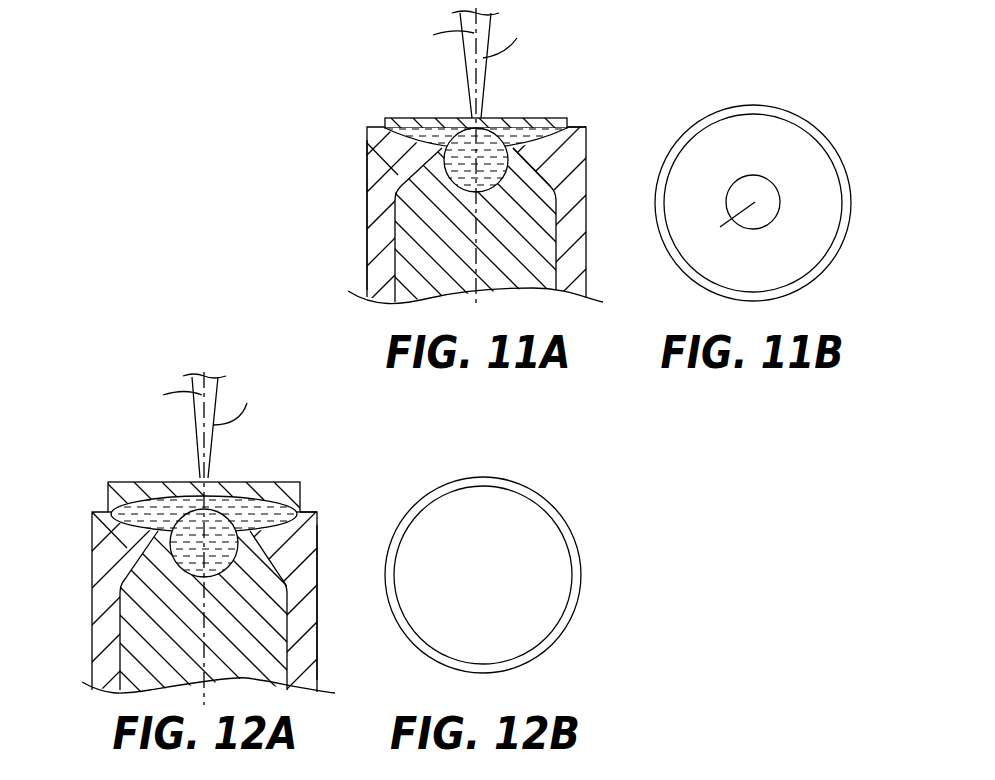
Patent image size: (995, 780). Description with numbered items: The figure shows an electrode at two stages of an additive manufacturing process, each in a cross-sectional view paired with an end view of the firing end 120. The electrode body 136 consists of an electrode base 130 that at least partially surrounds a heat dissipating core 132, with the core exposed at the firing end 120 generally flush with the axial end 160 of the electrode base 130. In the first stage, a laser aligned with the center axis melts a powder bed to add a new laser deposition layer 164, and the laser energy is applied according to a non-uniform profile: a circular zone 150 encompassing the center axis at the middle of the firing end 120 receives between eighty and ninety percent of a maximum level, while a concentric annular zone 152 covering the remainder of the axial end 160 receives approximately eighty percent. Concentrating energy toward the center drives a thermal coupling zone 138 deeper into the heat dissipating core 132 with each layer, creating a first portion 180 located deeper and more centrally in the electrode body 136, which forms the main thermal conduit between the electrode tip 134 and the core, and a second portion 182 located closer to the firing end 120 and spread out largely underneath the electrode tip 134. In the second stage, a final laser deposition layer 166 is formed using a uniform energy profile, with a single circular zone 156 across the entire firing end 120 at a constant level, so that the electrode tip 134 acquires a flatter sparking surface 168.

In FIG. 11A, the firing end 120 is at (473, 159).
In FIG. 11B, the firing end 120 is at (766, 178).
In FIG. 12A, the firing end 120 is at (252, 538).
In FIG. 12B, the firing end 120 is at (516, 566).
In FIG. 11A, the electrode base 130 is at (390, 152).
In FIG. 12A, the electrode base 130 is at (105, 533).
In FIG. 11A, the heat dissipating core 132 is at (452, 245).
In FIG. 12A, the heat dissipating core 132 is at (187, 633).
In FIG. 12A, the electrode tip 134 is at (298, 488).
In FIG. 11A, the electrode body 136 is at (367, 213).
In FIG. 12A, the electrode body 136 is at (317, 652).
In FIG. 11A, the thermal coupling zone 138 is at (507, 153).
In FIG. 11B, the zone 150 is at (760, 188).
In FIG. 11B, the zone 152 is at (733, 150).
In FIG. 12B, the single circular zone 156 is at (518, 560).
In FIG. 11A, the axial end 160 is at (567, 128).
In FIG. 12A, the axial end 160 is at (310, 512).
In FIG. 11A, the laser deposition layer 164 is at (403, 128).
In FIG. 12A, the final laser deposition layer 166 is at (162, 503).
In FIG. 12A, the sparking surface 168 is at (133, 482).
In FIG. 11A, the first portion 180 is at (492, 162).
In FIG. 12A, the first portion 180 is at (204, 538).
In FIG. 11A, the second portion 182 is at (413, 133).